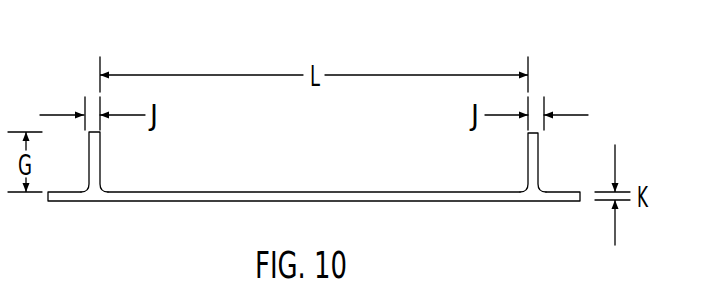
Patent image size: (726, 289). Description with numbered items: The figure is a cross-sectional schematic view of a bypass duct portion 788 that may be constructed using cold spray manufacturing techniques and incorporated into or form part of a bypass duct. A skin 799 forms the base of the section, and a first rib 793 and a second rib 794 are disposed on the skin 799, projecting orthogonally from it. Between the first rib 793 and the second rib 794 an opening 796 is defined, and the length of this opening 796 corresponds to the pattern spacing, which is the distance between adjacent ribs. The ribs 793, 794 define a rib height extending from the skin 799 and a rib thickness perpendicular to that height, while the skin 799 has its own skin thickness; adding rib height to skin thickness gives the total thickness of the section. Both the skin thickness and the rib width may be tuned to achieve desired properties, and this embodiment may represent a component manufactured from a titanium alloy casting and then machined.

The bypass duct portion 788 is at (112, 34).
The first rib 793 is at (100, 170).
The second rib 794 is at (528, 140).
The opening 796 is at (330, 192).
The skin 799 is at (438, 201).